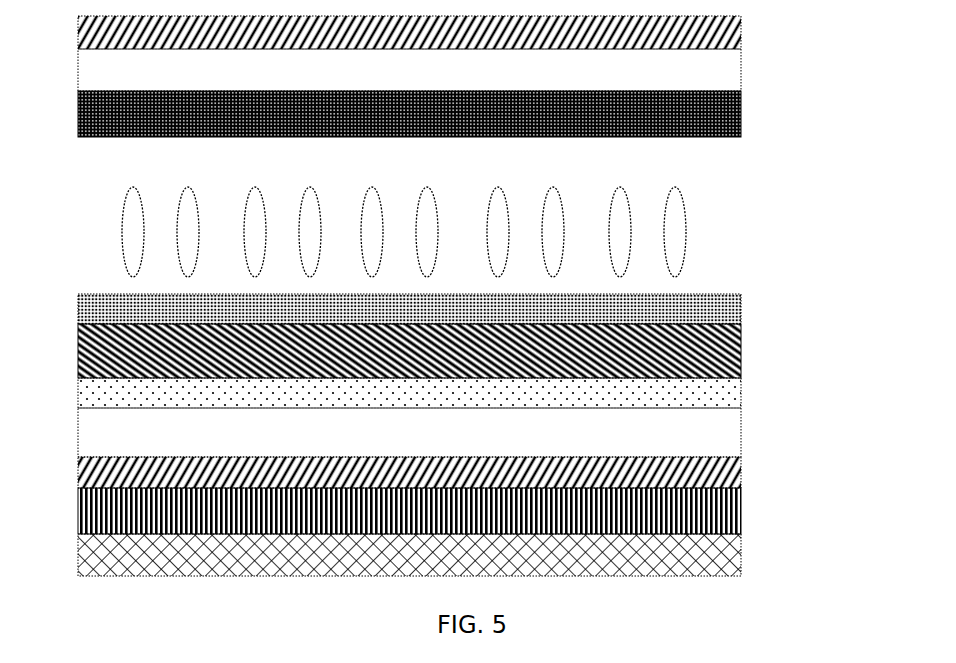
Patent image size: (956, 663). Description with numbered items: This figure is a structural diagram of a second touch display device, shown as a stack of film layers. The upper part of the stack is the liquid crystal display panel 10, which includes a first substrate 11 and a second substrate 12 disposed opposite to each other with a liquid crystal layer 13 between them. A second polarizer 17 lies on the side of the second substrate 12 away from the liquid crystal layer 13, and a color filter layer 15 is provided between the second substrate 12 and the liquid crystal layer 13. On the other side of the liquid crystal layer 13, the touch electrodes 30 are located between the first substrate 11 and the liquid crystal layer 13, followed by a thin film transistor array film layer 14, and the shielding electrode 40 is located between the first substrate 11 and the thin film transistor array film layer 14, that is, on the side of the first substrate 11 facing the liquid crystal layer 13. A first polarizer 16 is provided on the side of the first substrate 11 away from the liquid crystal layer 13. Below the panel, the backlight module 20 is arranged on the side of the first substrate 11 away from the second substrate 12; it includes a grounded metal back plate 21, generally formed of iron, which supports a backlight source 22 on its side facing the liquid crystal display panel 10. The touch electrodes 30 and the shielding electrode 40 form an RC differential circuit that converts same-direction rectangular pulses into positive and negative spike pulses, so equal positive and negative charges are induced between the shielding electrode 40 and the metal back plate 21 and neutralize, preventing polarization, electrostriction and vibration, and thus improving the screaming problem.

The liquid crystal display panel 10 is at (469, 251).
The first substrate 11 is at (723, 435).
The second substrate 12 is at (697, 66).
The liquid crystal layer 13 is at (678, 223).
The thin film transistor array film layer 14 is at (741, 356).
The color filter layer 15 is at (741, 118).
The first polarizer 16 is at (735, 480).
The second polarizer 17 is at (700, 30).
The backlight module 20 is at (485, 533).
The metal back plate 21 is at (741, 560).
The backlight source 22 is at (723, 517).
The touch electrodes 30 is at (78, 311).
The shielding electrode 40 is at (95, 390).